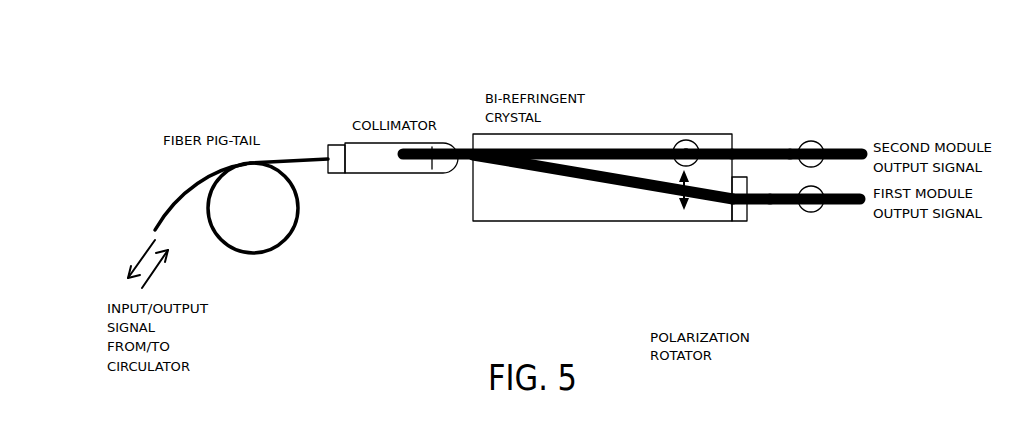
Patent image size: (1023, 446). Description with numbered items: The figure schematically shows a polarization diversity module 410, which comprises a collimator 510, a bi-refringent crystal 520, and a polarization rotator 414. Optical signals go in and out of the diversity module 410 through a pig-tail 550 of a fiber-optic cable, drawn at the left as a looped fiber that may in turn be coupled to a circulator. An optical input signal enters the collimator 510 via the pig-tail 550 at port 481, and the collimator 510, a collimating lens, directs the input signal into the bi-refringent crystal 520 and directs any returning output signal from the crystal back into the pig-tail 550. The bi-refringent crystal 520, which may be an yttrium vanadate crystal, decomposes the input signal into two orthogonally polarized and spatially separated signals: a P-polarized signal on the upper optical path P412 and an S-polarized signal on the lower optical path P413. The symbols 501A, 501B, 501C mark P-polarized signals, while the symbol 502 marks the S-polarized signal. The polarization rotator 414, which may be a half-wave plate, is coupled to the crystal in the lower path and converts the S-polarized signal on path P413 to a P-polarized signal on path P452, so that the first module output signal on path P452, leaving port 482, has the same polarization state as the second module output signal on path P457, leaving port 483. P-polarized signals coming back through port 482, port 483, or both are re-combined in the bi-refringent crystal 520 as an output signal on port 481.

The polarization diversity module 410 is at (355, 130).
The port 481 is at (337, 145).
The collimator 510 is at (400, 174).
The bi-refringent crystal 520 is at (473, 205).
The pig-tail 550 is at (266, 252).
The optical path P412 is at (607, 148).
The optical path P413 is at (590, 183).
The port 483 is at (738, 140).
The optical path P457 is at (790, 147).
The polarization rotator 414 is at (734, 222).
The port 482 is at (748, 212).
The optical path P452 is at (770, 206).
The P-polarized signal symbol 501A is at (697, 134).
The P-polarized signal symbol 501B is at (814, 141).
The P-polarized signal symbol 501C is at (814, 212).
The S-polarized signal symbol 502 is at (680, 210).